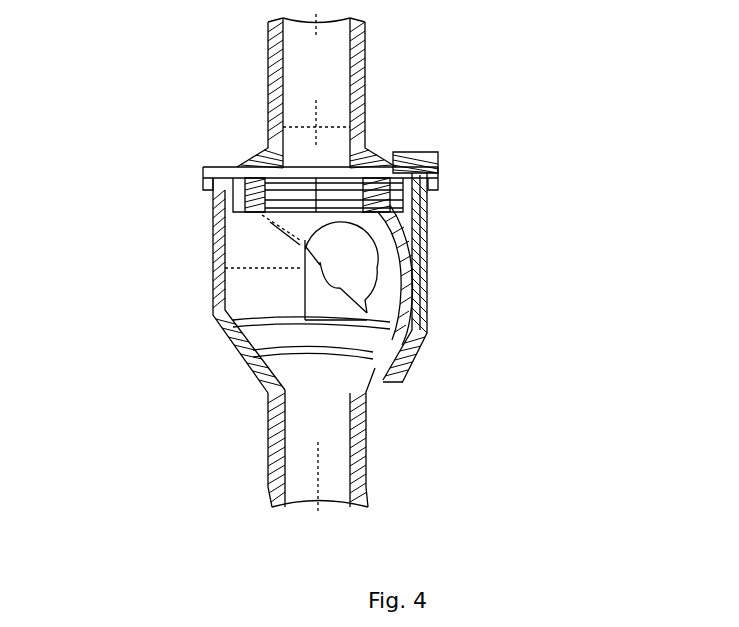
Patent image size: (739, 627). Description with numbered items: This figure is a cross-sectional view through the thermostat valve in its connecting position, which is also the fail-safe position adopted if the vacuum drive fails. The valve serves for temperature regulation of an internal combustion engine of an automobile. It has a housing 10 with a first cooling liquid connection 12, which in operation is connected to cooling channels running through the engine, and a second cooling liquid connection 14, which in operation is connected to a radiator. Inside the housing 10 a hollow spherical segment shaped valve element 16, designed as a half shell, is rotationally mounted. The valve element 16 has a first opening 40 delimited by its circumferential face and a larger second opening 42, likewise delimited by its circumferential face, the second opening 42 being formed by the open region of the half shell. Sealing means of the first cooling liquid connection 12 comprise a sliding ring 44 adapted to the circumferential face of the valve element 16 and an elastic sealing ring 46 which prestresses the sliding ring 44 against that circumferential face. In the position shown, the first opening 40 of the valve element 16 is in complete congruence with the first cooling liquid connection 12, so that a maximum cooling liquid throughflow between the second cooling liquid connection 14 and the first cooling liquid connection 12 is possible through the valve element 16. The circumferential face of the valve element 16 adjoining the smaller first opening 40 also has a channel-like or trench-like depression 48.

The housing 10 is at (222, 240).
The first cooling liquid connection 12 is at (292, 158).
The second cooling liquid connection 14 is at (333, 383).
The valve element 16 is at (387, 303).
The first opening 40 is at (338, 212).
The second opening 42 is at (270, 222).
The sliding ring 44 is at (380, 203).
The elastic sealing ring 46 is at (380, 192).
The depression 48 is at (380, 215).